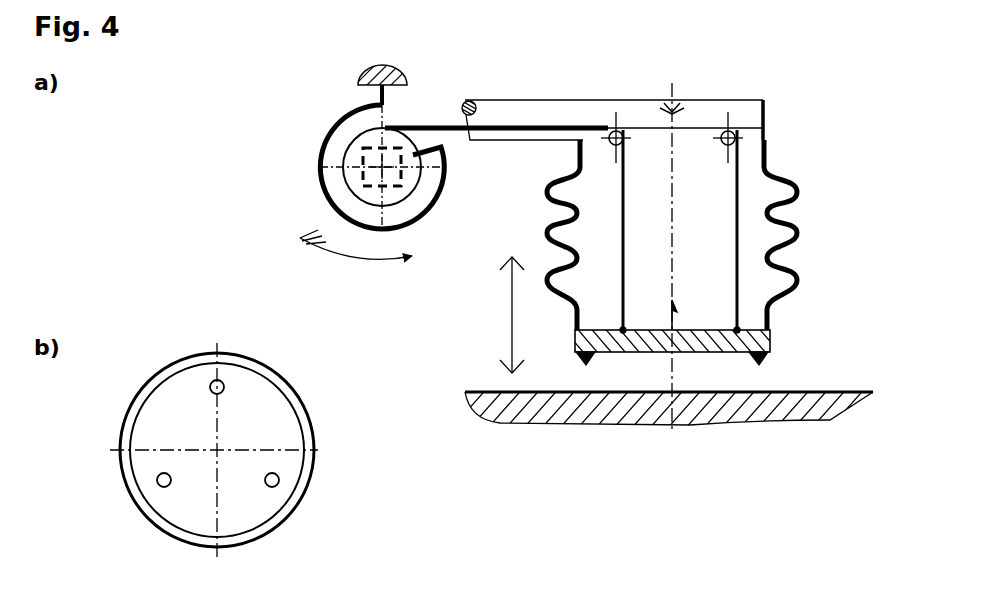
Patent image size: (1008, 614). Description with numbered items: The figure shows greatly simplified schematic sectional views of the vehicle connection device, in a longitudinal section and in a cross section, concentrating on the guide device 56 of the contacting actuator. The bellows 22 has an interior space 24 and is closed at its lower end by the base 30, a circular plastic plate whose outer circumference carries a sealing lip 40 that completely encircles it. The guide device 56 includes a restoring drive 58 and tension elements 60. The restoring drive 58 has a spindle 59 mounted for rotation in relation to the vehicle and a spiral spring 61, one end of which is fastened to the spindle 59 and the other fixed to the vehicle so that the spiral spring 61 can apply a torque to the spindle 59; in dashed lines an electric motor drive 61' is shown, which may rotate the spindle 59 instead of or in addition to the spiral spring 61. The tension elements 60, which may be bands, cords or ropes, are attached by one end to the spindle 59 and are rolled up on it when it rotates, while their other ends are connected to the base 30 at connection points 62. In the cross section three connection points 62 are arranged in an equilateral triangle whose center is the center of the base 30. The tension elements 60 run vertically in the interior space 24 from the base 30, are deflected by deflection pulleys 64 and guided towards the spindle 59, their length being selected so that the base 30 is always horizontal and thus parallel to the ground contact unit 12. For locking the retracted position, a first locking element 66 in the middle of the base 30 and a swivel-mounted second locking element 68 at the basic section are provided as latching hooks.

In FIG. 4a, the ground contact unit 12 is at (750, 412).
In FIG. 4a, the bellows 22 is at (767, 168).
In FIG. 4b, the bellows 22 is at (295, 410).
In FIG. 4a, the interior space 24 is at (743, 113).
In FIG. 4a, the base 30 is at (775, 338).
In FIG. 4b, the base 30 is at (180, 390).
In FIG. 4a, the sealing lip 40 is at (765, 358).
In FIG. 4a, the guide device 56 is at (466, 270).
In FIG. 4a, the restoring drive 58 is at (304, 203).
In FIG. 4a, the spindle 59 is at (388, 147).
In FIG. 4a, the tension elements 60 is at (650, 128).
In FIG. 4a, the spiral spring 61 is at (317, 155).
In FIG. 4a, the electric motor drive 61' is at (305, 127).
In FIG. 4a, the connection point 62 is at (620, 330).
In FIG. 4b, the connection point 62 is at (222, 382).
In FIG. 4a, the deflection pulleys 64 is at (616, 131).
In FIG. 4a, the first locking element 66 is at (725, 68).
In FIG. 4a, the second locking element 68 is at (684, 296).